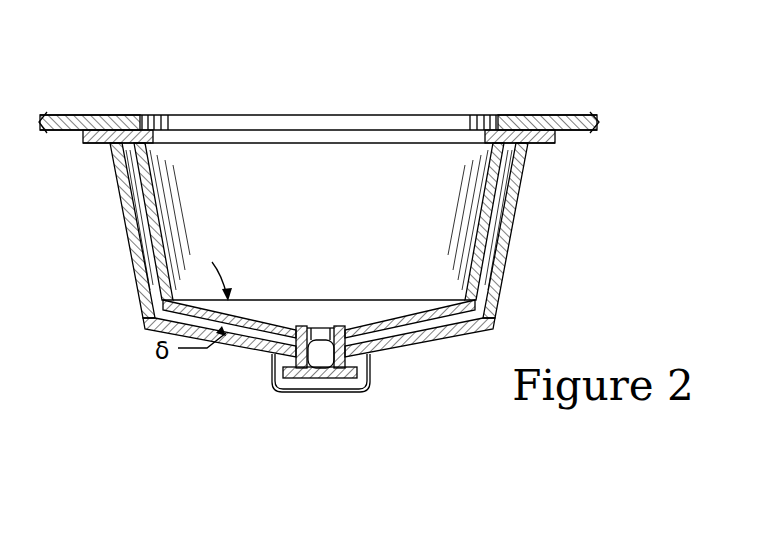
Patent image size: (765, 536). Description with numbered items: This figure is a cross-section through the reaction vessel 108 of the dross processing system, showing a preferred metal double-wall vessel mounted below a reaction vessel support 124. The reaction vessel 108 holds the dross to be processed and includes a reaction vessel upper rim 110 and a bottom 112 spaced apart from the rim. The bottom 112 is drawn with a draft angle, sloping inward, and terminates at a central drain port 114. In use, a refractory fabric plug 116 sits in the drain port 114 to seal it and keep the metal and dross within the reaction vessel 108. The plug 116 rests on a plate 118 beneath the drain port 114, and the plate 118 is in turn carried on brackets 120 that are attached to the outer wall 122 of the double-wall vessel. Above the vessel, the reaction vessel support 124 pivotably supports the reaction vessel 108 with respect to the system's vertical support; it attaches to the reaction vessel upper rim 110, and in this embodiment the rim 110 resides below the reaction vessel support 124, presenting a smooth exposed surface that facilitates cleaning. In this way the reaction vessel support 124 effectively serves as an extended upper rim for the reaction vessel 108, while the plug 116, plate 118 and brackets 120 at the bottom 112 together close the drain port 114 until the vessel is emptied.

The reaction vessel 108 is at (370, 116).
The reaction vessel upper rim 110 is at (180, 135).
The bottom 112 is at (423, 300).
The drain port 114 is at (303, 333).
The refractory fabric plug 116 is at (316, 356).
The plate 118 is at (306, 377).
The brackets 120 is at (368, 381).
The outer wall 122 is at (127, 243).
The reaction vessel support 124 is at (93, 115).